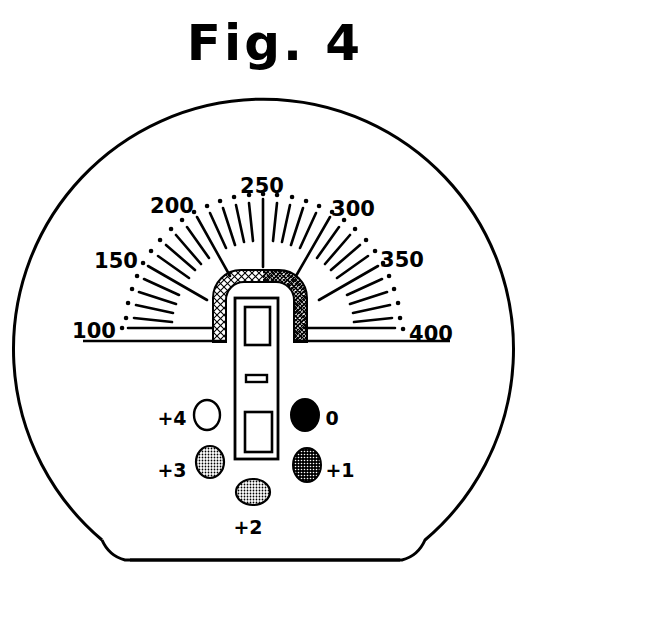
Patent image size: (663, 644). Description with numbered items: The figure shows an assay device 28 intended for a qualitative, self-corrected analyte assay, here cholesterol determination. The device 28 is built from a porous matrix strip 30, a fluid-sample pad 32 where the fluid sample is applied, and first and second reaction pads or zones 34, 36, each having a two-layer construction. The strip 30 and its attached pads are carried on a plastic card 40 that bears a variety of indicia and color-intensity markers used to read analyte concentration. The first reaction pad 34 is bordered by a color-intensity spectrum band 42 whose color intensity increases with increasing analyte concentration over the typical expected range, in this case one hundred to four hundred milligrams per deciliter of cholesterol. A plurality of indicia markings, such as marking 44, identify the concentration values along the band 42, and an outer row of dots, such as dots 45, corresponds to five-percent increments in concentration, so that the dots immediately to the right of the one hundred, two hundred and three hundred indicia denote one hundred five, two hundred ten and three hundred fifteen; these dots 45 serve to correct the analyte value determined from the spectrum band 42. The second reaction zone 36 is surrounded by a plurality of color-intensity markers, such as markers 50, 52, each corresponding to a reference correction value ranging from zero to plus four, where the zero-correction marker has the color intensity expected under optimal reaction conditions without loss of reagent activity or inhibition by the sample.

The assay device 28 is at (490, 235).
The porous matrix strip 30 is at (278, 385).
The fluid-sample pad 32 is at (243, 382).
The first reaction pad 34 is at (267, 338).
The second reaction pad 36 is at (272, 460).
The plastic card 40 is at (458, 477).
The color-intensity spectrum band 42 is at (203, 342).
The indicia marking 44 is at (385, 298).
The dots 45 is at (128, 309).
The color-intensity marker 50 is at (198, 472).
The color-intensity marker 52 is at (237, 495).